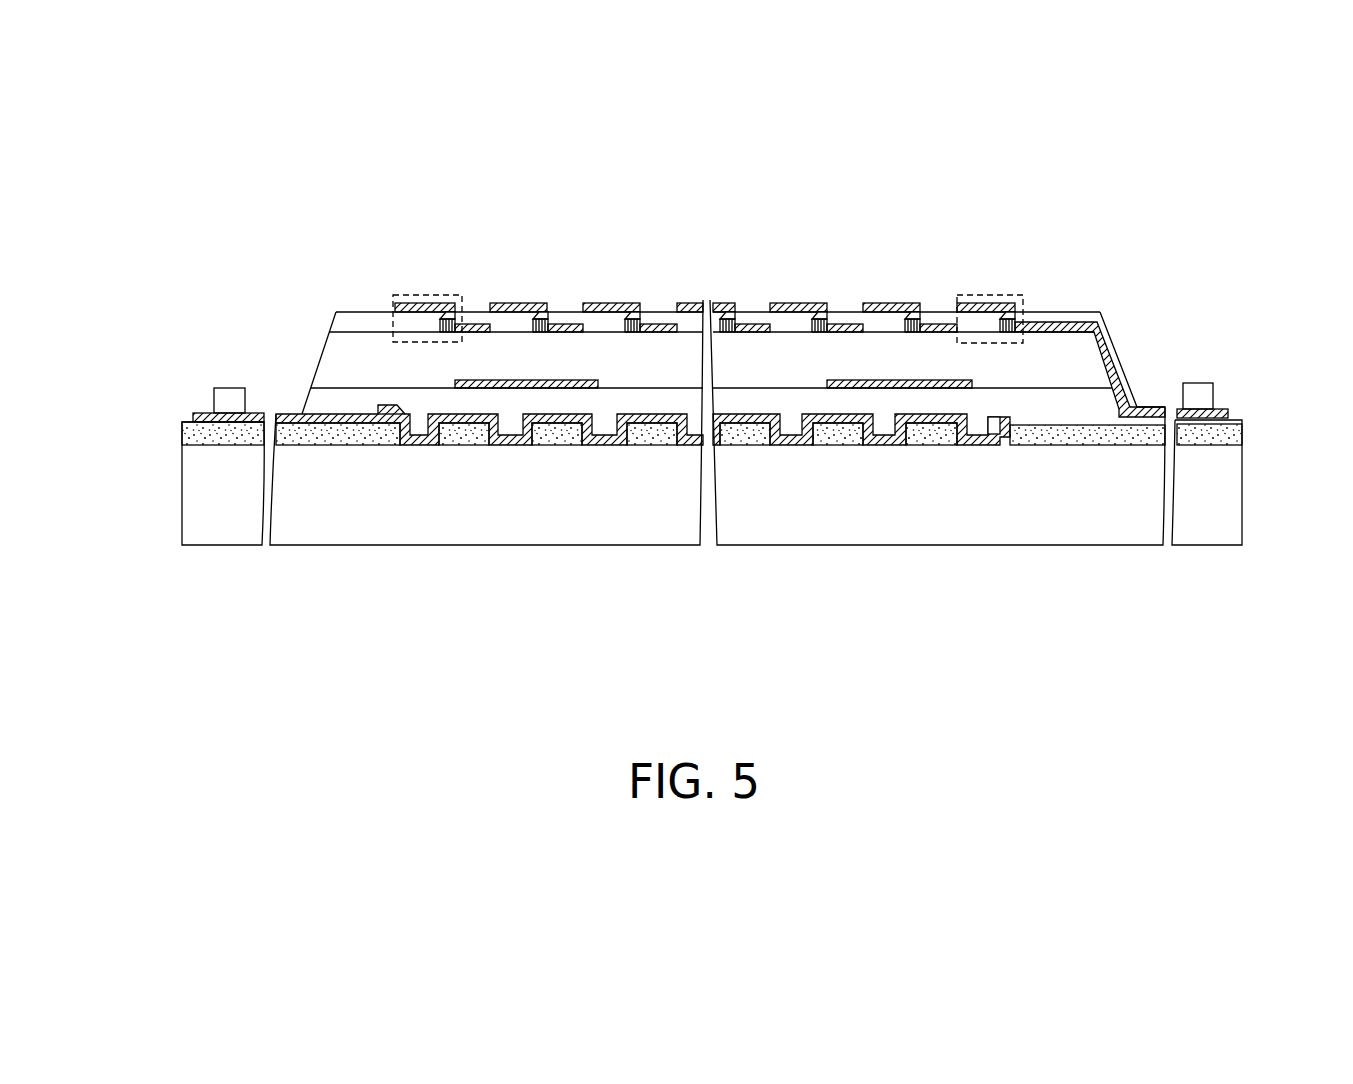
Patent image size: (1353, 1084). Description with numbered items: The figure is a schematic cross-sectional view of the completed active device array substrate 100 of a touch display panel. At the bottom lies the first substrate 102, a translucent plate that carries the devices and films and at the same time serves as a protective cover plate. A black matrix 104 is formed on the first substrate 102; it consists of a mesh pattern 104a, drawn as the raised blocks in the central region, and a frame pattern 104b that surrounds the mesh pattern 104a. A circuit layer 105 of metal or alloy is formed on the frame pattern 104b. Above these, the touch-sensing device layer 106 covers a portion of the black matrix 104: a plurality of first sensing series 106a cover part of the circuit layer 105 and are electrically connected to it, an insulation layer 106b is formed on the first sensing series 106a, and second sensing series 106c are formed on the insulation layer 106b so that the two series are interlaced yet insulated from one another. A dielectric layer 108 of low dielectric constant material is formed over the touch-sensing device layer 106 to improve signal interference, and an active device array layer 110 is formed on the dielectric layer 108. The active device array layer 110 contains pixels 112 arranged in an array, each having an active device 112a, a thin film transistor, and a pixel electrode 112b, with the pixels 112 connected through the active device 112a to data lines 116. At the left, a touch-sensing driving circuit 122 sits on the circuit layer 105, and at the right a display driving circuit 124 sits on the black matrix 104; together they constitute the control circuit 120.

The active device array substrate 100 is at (1345, 653).
The first substrate 102 is at (1222, 498).
The black matrix 104 is at (1207, 587).
The mesh pattern 104a is at (470, 445).
The frame pattern 104b is at (198, 430).
The circuit layer 105 is at (193, 417).
The touch-sensing device layer 106 is at (678, 245).
The first sensing series 106a is at (513, 442).
The insulation layer 106b is at (572, 407).
The second sensing series 106c is at (598, 380).
The dielectric layer 108 is at (902, 368).
The active device array layer 110 is at (322, 305).
The pixel 112 is at (393, 300).
The active device 112a is at (446, 319).
The pixel electrode 112b is at (402, 303).
The data line 116 is at (480, 311).
The control circuit 120 is at (190, 582).
The touch-sensing driving circuit 122 is at (230, 395).
The display driving circuit 124 is at (1203, 395).